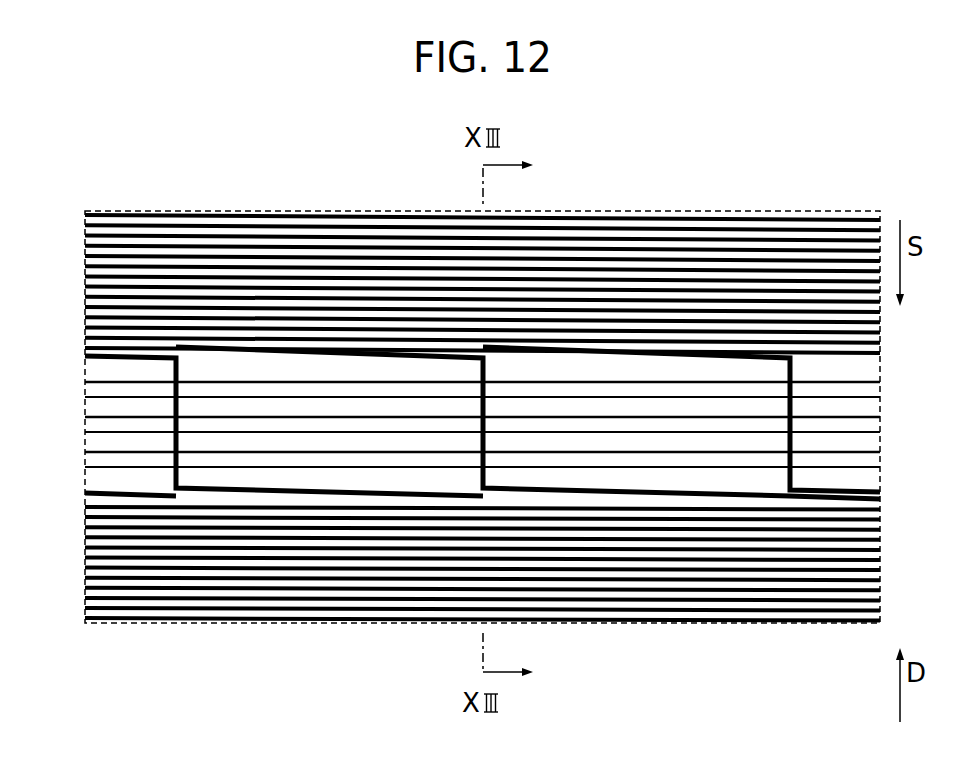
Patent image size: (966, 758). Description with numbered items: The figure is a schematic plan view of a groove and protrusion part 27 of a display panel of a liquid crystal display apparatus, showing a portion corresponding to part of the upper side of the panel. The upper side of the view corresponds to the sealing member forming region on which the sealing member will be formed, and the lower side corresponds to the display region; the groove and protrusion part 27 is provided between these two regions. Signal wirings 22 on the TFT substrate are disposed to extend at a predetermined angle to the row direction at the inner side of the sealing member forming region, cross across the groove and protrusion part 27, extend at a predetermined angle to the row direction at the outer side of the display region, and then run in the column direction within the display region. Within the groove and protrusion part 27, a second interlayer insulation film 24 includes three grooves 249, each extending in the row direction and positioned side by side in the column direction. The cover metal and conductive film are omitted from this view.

The signal wirings 22 is at (208, 490).
The second interlayer insulation film 24 is at (91, 405).
The groove and protrusion part 27 is at (870, 367).
The grooves 249 is at (428, 390).